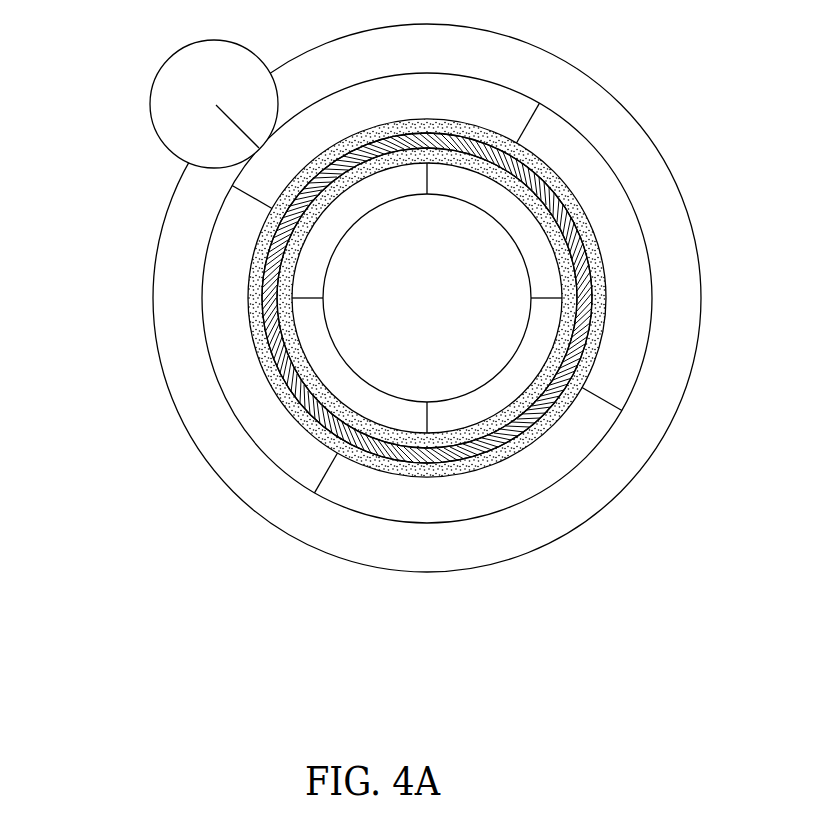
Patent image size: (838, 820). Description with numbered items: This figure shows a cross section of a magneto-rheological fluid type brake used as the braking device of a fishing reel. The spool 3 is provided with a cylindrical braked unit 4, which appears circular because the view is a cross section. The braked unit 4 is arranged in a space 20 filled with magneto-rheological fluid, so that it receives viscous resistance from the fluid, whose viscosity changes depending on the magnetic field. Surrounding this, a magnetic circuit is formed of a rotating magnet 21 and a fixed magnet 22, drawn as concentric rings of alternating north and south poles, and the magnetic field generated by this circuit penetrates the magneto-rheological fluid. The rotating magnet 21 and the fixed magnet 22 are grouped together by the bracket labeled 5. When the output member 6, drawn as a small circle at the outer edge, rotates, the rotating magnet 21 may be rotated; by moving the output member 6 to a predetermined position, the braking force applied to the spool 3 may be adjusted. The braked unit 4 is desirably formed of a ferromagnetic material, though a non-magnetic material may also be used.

The spool 3 is at (627, 463).
The braked unit 4 is at (592, 303).
The motor 5 is at (331, 298).
The output member 6 is at (166, 98).
The space 20 is at (522, 452).
The rotating magnet 21 is at (228, 274).
The fixed magnet 22 is at (320, 344).